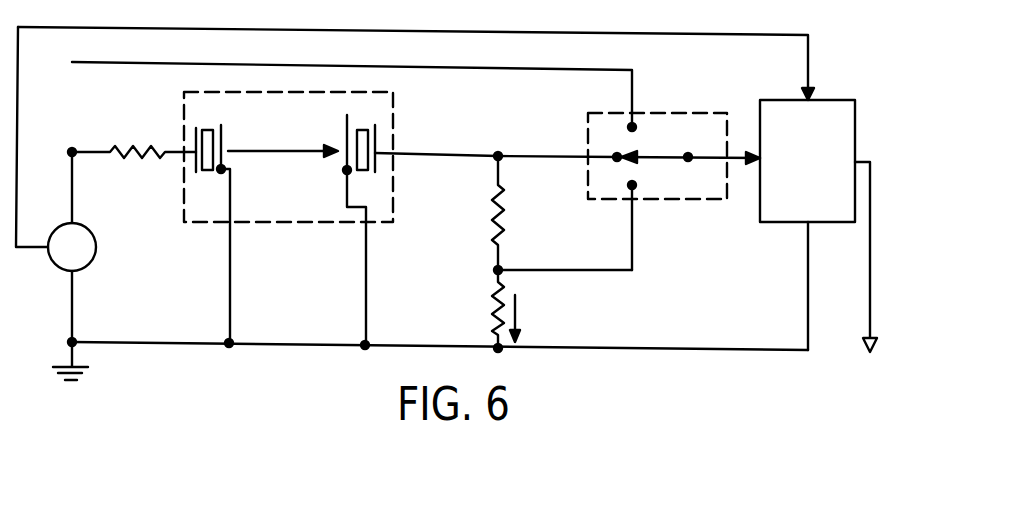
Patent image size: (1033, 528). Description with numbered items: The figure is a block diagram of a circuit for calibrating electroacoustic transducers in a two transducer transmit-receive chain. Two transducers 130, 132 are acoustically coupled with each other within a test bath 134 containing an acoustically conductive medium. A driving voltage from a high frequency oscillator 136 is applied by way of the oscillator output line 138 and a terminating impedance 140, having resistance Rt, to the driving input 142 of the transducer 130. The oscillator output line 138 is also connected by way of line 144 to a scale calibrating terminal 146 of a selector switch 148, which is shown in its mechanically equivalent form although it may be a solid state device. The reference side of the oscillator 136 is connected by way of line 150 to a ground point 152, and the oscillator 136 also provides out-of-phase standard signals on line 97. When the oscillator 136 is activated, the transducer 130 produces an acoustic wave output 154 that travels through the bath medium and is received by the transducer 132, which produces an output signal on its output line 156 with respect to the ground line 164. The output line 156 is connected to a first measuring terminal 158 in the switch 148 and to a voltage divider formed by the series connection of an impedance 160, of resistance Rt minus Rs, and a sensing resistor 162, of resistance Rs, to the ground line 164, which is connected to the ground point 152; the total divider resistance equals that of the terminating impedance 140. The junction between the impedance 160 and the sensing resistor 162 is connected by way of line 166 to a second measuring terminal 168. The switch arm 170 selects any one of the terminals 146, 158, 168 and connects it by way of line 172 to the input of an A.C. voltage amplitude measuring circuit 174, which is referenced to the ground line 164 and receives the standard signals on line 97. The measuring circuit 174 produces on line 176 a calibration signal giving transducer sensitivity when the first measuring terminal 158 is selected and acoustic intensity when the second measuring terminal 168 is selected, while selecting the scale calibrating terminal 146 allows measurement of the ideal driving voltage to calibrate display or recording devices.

The line 97 is at (18, 82).
The transducer 130 is at (232, 129).
The transducer 132 is at (347, 115).
The test bath 134 is at (398, 188).
The high frequency oscillator 136 is at (100, 205).
The oscillator output line 138 is at (70, 200).
The terminating impedance 140 is at (133, 143).
The driving input 142 is at (197, 128).
The line 144 is at (304, 64).
The scale calibrating terminal 146 is at (634, 125).
The selector switch 148 is at (720, 193).
The line 150 is at (75, 310).
The ground point 152 is at (60, 360).
The acoustic wave output 154 is at (272, 156).
The output line 156 is at (427, 152).
The first measuring terminal 158 is at (617, 157).
The impedance 160 is at (503, 216).
The sensing resistor 162 is at (492, 296).
The ground line 164 is at (290, 342).
The line 166 is at (598, 272).
The second measuring terminal 168 is at (630, 190).
The switch arm 170 is at (660, 157).
The line 172 is at (733, 153).
The A.C. voltage amplitude measuring circuit 174 is at (780, 224).
The line 176 is at (868, 272).